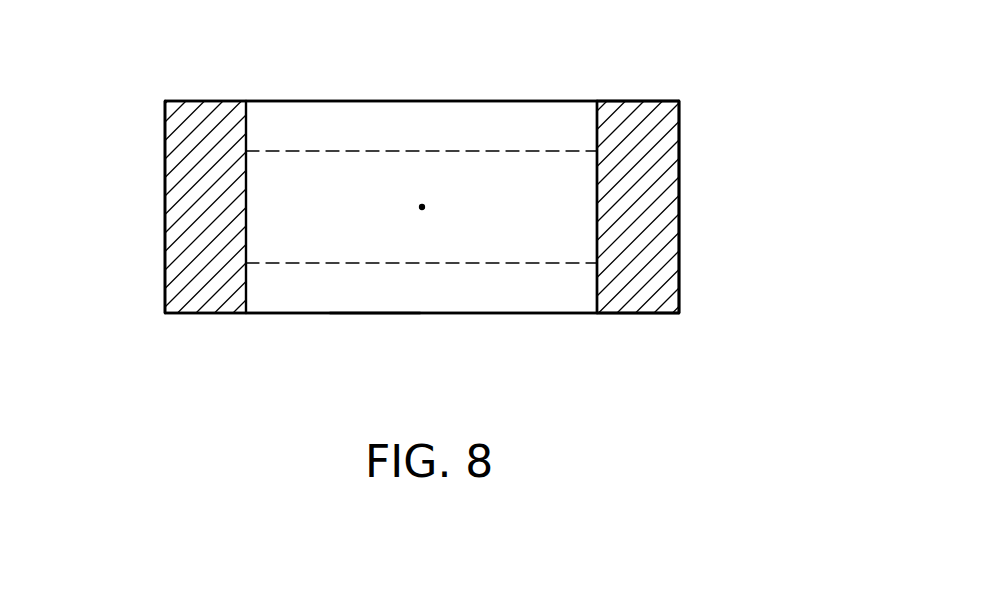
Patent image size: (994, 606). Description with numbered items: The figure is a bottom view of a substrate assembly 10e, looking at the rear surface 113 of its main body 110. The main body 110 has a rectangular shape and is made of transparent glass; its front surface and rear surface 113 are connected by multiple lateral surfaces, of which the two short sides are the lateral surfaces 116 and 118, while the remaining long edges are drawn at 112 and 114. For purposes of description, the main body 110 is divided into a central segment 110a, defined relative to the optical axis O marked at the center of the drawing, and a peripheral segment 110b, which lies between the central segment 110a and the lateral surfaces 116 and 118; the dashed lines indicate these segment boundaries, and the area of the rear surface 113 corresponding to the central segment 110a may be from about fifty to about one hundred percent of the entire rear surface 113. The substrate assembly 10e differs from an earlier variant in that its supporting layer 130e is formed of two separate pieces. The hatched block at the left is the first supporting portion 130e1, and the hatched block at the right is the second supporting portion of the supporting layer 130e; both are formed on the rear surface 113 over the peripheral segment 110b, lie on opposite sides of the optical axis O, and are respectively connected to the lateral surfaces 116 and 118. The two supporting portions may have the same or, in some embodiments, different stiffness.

The substrate assembly 10e is at (727, 82).
The main body 110 is at (432, 101).
The central segment 110a is at (530, 190).
The peripheral segment 110b is at (531, 288).
The top surface 112 is at (308, 100).
The rear surface 113 is at (371, 287).
The bottom surface 114 is at (287, 316).
The lateral surface 116 is at (164, 243).
The lateral surface 118 is at (681, 243).
The supporting layer 130e is at (648, 190).
The first supporting portion 130e1 is at (190, 135).
The optical axis O is at (422, 210).